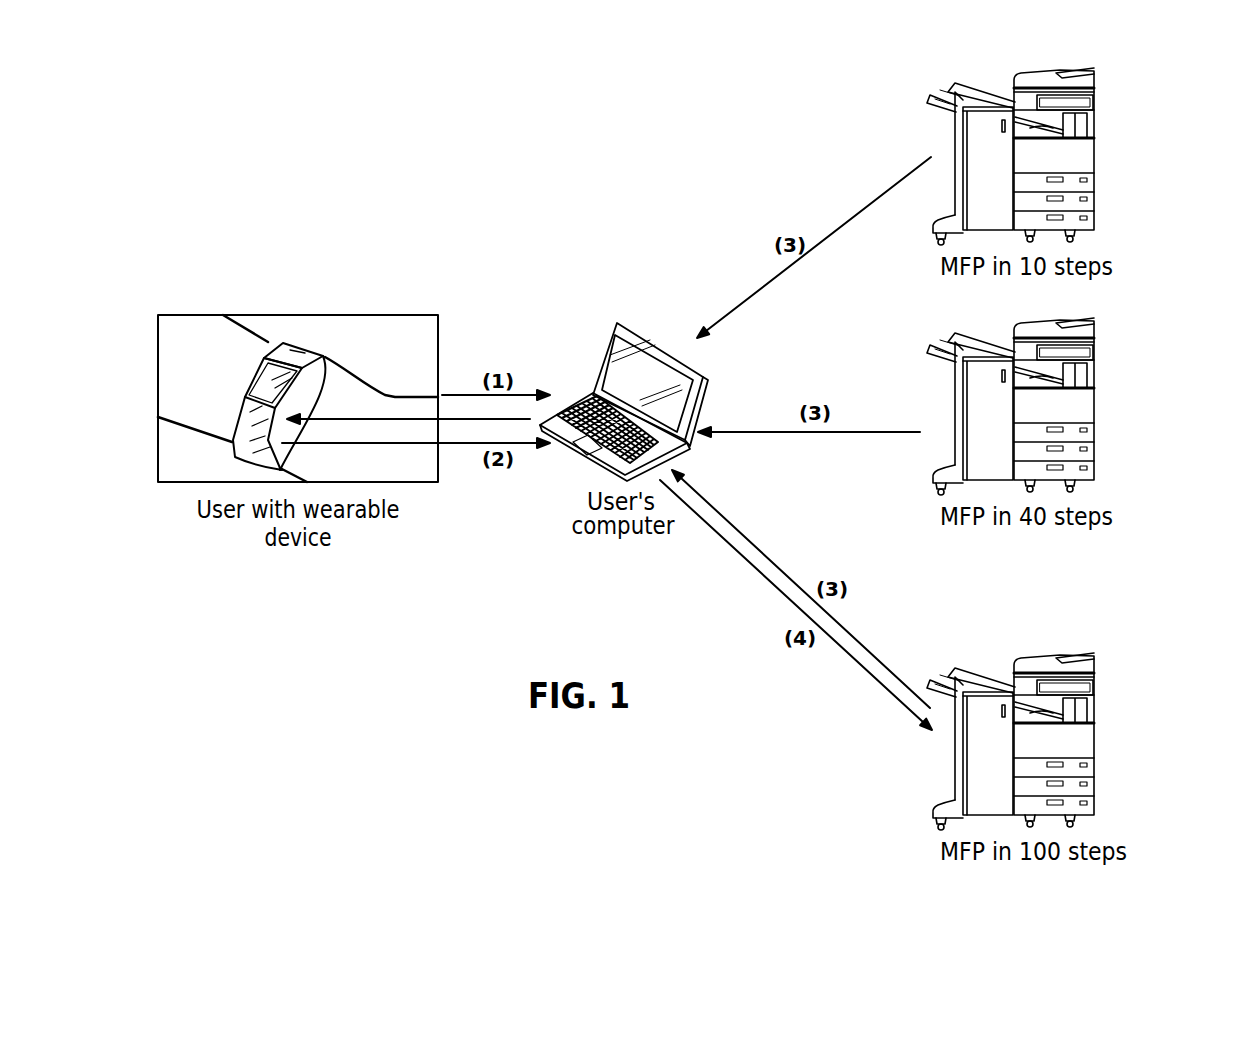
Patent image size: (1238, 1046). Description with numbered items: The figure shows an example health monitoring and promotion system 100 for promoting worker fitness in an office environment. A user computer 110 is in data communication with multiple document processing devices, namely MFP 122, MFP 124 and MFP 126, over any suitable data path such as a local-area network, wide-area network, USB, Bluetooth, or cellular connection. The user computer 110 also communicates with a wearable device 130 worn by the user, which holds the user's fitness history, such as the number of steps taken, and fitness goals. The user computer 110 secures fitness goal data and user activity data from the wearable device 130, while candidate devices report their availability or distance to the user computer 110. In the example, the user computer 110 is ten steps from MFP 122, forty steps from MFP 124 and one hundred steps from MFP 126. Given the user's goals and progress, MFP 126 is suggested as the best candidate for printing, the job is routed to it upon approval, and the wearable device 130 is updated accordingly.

The health monitoring and promotion system 100 is at (362, 130).
The user computer 110 is at (648, 340).
The MFP 122 is at (1080, 158).
The MFP 124 is at (1078, 407).
The MFP 126 is at (1080, 740).
The wearable device 130 is at (295, 357).